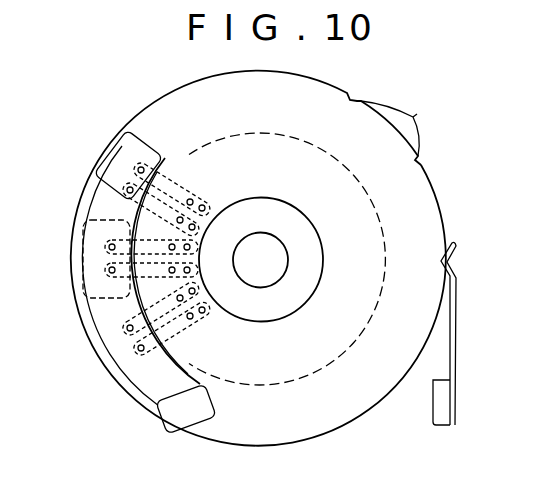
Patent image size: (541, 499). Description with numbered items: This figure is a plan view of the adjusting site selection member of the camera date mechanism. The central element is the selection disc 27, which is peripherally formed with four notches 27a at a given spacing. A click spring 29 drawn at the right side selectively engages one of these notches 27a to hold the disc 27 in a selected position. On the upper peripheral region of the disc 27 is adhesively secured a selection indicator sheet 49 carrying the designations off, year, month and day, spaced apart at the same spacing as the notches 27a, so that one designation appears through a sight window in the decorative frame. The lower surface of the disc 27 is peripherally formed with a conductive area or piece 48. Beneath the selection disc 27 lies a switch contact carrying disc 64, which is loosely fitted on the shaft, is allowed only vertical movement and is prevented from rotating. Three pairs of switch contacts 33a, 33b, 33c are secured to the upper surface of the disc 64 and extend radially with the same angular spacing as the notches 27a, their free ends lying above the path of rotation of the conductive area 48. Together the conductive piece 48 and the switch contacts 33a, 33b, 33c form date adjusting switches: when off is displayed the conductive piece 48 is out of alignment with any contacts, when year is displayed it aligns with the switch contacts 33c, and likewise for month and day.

The selection disc 27 is at (205, 98).
The notches 27a is at (413, 117).
The click spring 29 is at (457, 327).
The switch contacts 33a is at (222, 325).
The switch contacts 33b is at (200, 255).
The switch contacts 33c is at (212, 183).
The conductive area 48 is at (108, 302).
The selection indicator sheet 49 is at (153, 155).
The switch contact carrying disc 64 is at (385, 222).